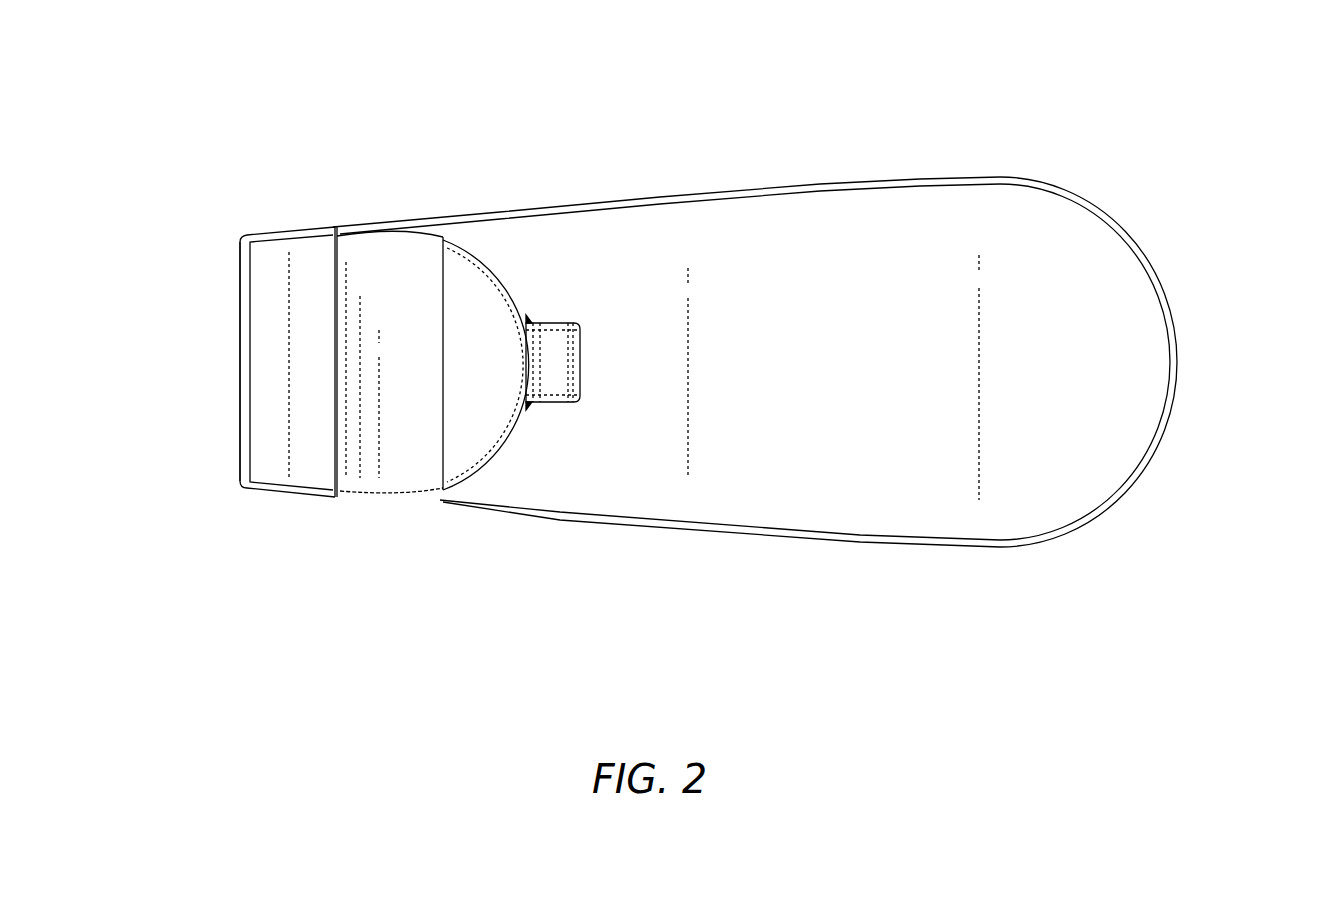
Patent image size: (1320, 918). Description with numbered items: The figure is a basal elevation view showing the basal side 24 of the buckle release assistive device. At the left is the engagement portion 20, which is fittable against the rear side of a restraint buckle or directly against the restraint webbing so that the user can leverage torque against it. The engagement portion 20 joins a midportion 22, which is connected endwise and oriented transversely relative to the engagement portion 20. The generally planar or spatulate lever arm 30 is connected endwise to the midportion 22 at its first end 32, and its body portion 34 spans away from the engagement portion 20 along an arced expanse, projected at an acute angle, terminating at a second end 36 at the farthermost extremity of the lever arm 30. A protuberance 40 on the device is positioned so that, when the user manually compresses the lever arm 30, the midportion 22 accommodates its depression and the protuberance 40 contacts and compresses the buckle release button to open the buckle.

The engagement portion 20 is at (347, 303).
The midportion 22 is at (240, 363).
The basal side 24 is at (787, 494).
The lever arm 30 is at (809, 318).
The first end 32 is at (226, 303).
The body portion 34 is at (658, 552).
The second end 36 is at (1168, 297).
The protuberance 40 is at (541, 377).